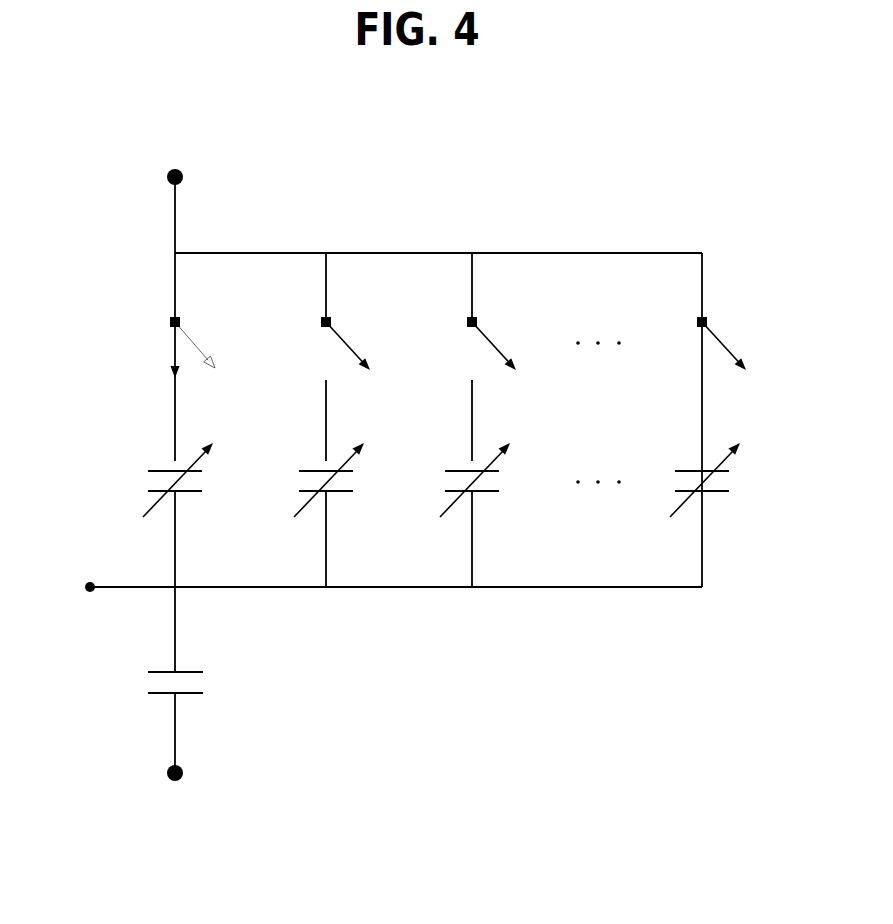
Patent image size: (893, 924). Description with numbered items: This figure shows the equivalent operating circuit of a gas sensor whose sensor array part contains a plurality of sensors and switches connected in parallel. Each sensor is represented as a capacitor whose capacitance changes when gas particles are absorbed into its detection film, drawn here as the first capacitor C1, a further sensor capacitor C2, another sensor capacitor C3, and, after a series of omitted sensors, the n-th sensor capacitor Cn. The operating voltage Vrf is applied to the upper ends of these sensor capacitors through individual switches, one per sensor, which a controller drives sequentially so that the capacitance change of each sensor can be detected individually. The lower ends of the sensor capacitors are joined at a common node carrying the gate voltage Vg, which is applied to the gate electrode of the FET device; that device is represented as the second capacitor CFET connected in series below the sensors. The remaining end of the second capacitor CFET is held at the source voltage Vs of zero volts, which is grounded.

The operating voltage Vrf is at (172, 298).
The first capacitor C1 is at (192, 515).
The first capacitor C2 is at (342, 515).
The first capacitor C3 is at (488, 515).
The first capacitor Cn is at (718, 480).
The gate voltage Vg is at (72, 585).
The second capacitor CFET is at (209, 680).
The source voltage Vs is at (174, 792).